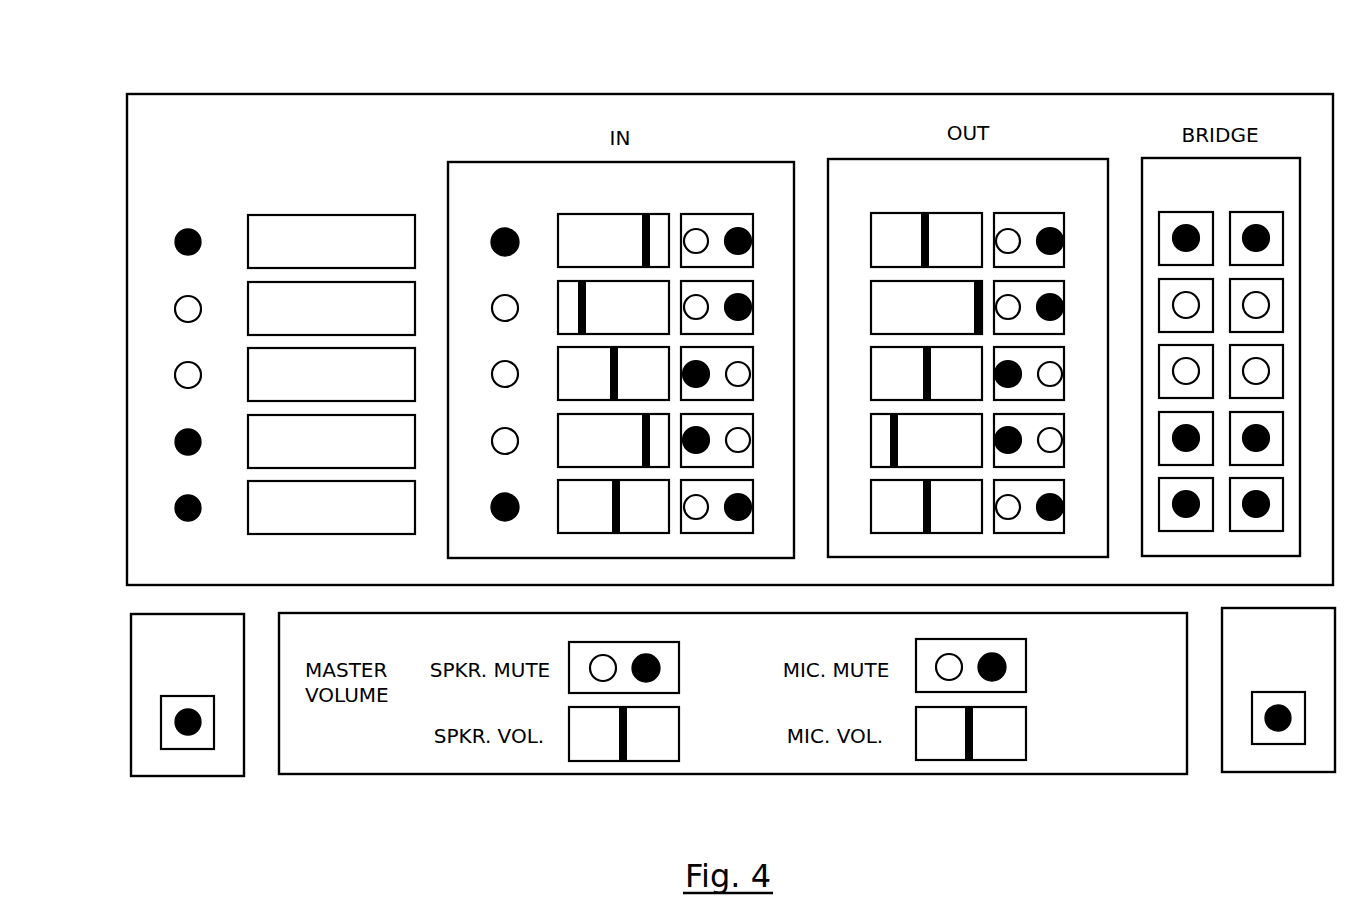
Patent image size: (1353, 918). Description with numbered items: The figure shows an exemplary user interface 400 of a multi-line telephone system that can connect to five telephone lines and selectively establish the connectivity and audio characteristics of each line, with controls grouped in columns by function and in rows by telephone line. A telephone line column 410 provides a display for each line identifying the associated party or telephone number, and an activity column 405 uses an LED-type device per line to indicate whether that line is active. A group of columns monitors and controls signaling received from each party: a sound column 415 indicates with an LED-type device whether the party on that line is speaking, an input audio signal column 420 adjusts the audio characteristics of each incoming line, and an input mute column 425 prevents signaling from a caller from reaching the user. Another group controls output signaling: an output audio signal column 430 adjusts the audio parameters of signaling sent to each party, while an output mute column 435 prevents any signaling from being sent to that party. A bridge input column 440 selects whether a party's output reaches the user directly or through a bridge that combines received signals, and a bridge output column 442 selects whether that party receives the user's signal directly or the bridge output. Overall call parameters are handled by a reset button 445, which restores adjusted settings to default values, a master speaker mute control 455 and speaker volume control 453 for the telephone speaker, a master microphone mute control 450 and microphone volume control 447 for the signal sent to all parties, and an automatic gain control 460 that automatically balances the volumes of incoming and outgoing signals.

The user interface 400 is at (705, 68).
The activity column 405 is at (185, 178).
The telephone line column 410 is at (330, 214).
The sound column 415 is at (500, 176).
The input audio signal column 420 is at (580, 208).
The input mute column 425 is at (737, 176).
The output audio signal column 430 is at (925, 176).
The output mute column 435 is at (1048, 176).
The bridge input column 440 is at (1170, 176).
The bridge output column 442 is at (1274, 176).
The reset button 445 is at (190, 749).
The microphone volume control 447 is at (940, 760).
The master microphone mute control 450 is at (1027, 667).
The speaker volume control 453 is at (593, 761).
The master speaker mute control 455 is at (680, 668).
The automatic gain control 460 is at (1275, 744).